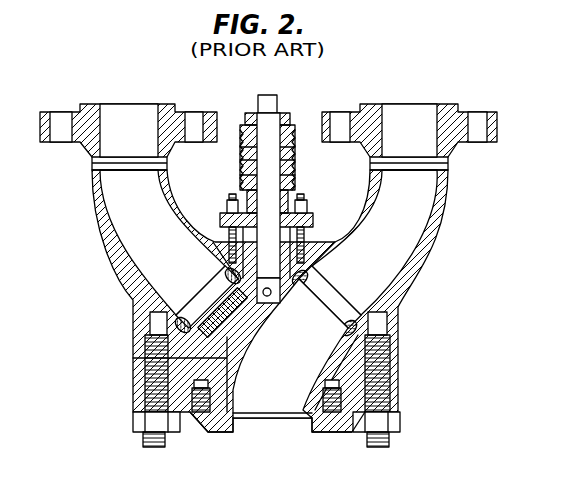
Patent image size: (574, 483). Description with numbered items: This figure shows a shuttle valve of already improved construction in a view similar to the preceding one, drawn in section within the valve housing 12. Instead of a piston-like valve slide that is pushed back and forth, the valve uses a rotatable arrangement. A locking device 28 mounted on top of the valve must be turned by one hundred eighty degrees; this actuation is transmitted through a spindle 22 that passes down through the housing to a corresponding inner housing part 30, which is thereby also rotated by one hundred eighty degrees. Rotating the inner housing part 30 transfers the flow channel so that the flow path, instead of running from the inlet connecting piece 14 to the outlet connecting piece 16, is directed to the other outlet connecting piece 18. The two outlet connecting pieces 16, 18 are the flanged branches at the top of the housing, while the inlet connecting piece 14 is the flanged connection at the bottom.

The valve body 12 is at (442, 236).
The inlet connecting piece 14 is at (313, 432).
The outlet connecting piece 16 is at (100, 104).
The other outlet connecting piece 18 is at (437, 106).
The spindle 22 is at (279, 102).
The locking device 28 is at (297, 143).
The inner housing part 30 is at (235, 418).